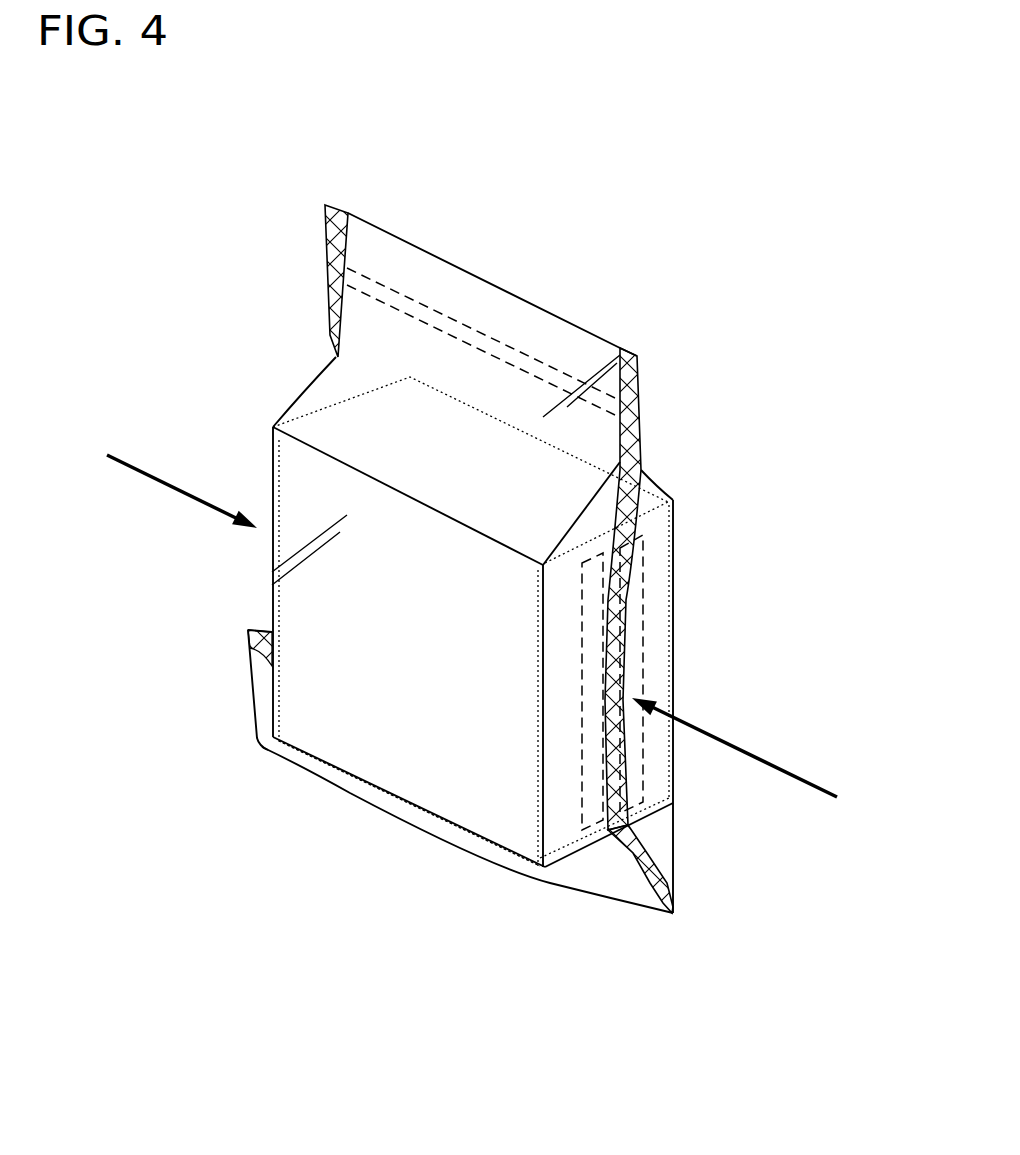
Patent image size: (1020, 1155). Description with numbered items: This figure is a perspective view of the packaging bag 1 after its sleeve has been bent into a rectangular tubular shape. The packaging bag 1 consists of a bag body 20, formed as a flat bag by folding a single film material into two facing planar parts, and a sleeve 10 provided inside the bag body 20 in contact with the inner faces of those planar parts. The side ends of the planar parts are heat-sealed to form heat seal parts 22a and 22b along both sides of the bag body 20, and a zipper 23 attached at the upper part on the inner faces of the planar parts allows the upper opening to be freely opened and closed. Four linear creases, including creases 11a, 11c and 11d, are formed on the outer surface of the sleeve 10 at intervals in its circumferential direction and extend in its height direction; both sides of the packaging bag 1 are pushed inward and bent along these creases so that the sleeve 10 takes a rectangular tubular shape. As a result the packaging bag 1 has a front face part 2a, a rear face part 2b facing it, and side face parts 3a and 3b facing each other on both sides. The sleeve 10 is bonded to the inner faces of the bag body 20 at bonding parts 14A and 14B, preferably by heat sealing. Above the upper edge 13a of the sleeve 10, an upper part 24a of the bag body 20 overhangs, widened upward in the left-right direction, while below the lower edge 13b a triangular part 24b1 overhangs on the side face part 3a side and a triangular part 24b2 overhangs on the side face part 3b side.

The packaging bag 1 is at (536, 240).
The front face part 2a is at (375, 682).
The rear face part 2b is at (673, 573).
The side face part 3a is at (313, 483).
The side face part 3b is at (647, 623).
The sleeve 10 is at (420, 728).
The crease 11a is at (273, 670).
The crease 11c is at (673, 747).
The crease 11d is at (540, 770).
The upper edge 13a is at (597, 467).
The lower edge 13b is at (450, 820).
The bonding part 14A is at (592, 812).
The bonding part 14B is at (637, 773).
The bag body 20 is at (673, 522).
The heat seal part 22a is at (325, 243).
The heat seal part 22b is at (620, 650).
The zipper 23 is at (386, 280).
The upper part 24a is at (552, 392).
The triangular part 24b1 is at (263, 722).
The triangular part 24b2 is at (657, 850).